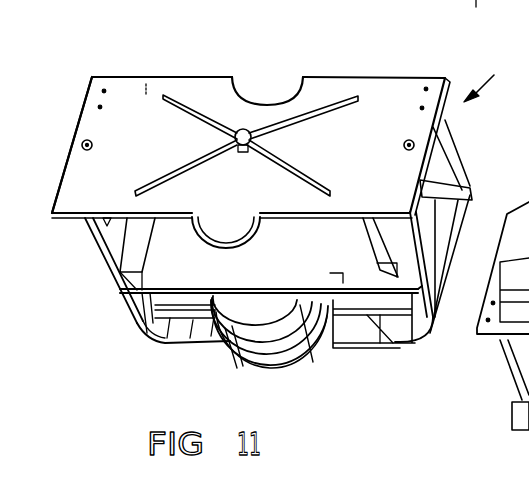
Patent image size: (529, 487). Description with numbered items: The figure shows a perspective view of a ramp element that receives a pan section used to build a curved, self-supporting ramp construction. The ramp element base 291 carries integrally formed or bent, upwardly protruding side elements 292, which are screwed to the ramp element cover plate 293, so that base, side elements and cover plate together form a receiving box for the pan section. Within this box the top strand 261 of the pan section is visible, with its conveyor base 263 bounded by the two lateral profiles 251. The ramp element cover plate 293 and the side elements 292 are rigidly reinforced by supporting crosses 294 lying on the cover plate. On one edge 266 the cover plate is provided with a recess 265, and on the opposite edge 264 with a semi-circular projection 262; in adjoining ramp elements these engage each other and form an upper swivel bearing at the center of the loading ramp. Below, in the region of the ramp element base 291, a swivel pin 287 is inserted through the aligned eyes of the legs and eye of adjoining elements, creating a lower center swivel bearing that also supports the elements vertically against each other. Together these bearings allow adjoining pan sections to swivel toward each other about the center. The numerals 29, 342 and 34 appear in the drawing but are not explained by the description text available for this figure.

The ramp element cover plate 293 is at (147, 72).
The edge 266 is at (208, 78).
The recess 265 is at (267, 88).
The opposite edge 264 is at (103, 214).
The supporting cross 294 is at (315, 107).
The assembly 29 is at (496, 82).
The top strand 261 is at (356, 254).
The lateral profile 251 is at (152, 248).
The semi-circular projection 262 is at (238, 230).
The side element 292 is at (115, 242).
The ramp element base 291 is at (169, 343).
The swivel pin 287 is at (236, 346).
The conveyor base 263 is at (343, 348).
The leg 342 is at (512, 365).
The foot 34 is at (513, 442).